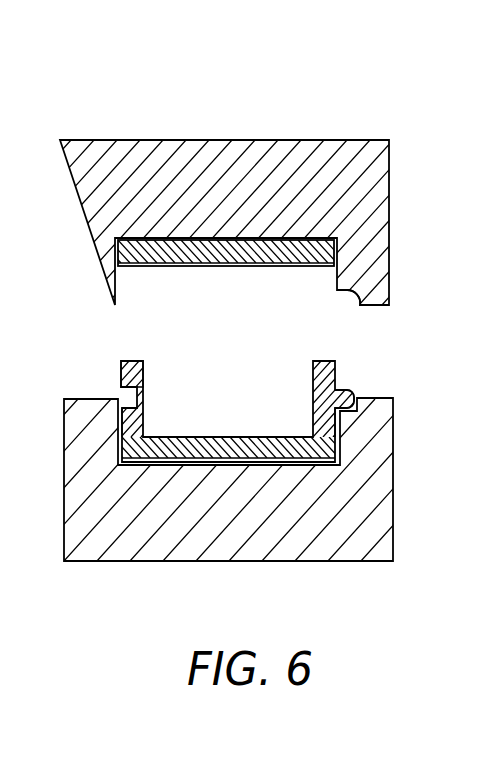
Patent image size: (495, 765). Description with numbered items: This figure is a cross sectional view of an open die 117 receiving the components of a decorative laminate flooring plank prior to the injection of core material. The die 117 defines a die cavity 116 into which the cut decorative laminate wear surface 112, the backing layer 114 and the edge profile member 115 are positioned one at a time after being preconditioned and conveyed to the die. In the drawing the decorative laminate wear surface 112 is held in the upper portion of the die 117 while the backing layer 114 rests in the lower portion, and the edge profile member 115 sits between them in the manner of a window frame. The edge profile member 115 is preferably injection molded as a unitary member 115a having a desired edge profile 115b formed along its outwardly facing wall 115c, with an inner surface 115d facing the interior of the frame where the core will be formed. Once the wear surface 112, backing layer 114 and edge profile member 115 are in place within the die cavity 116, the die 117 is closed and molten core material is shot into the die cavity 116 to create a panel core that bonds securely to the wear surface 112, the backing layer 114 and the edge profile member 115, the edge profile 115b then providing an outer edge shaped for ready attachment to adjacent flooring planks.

The die 117 is at (355, 146).
The decorative laminate wear surface 112 is at (340, 243).
The die cavity 116 is at (341, 279).
The backing layer 114 is at (342, 449).
The edge profile member 115 is at (63, 359).
The unitary member 115a is at (337, 360).
The edge profile 115b is at (342, 390).
The outwardly facing wall 115c is at (120, 418).
The inner surface 115d is at (145, 376).